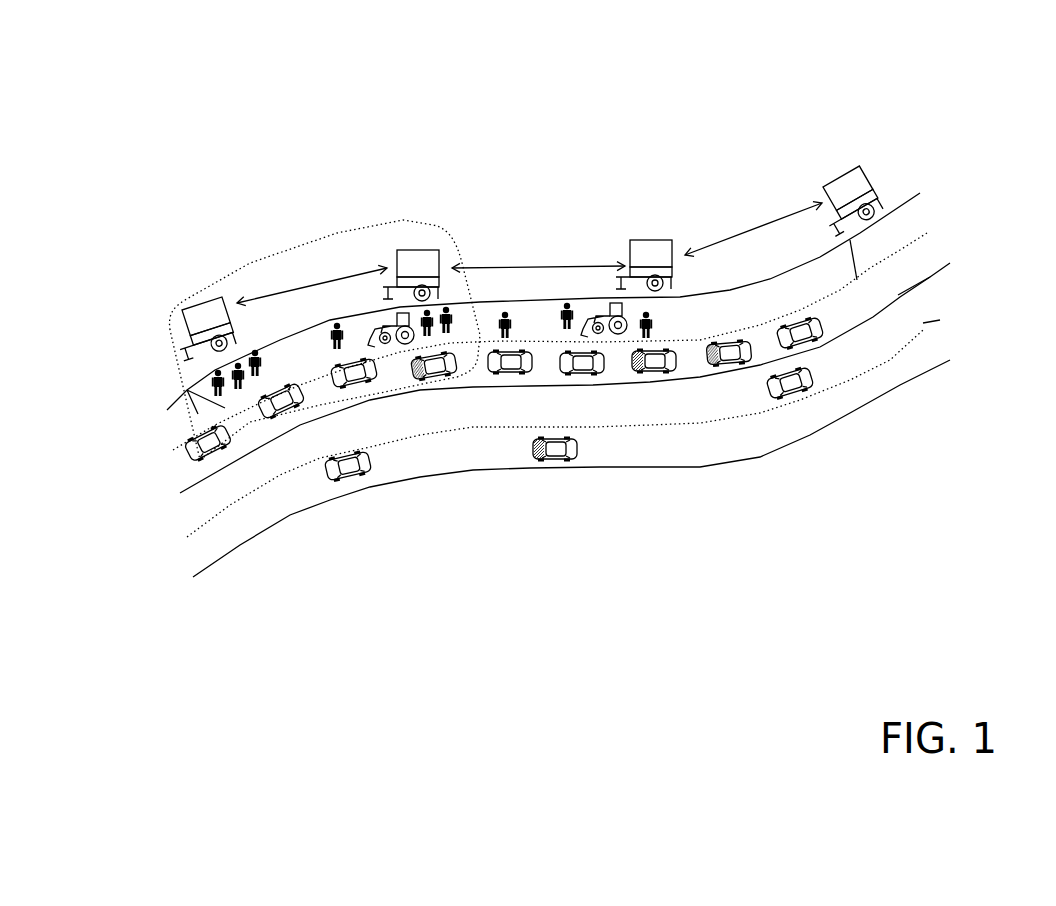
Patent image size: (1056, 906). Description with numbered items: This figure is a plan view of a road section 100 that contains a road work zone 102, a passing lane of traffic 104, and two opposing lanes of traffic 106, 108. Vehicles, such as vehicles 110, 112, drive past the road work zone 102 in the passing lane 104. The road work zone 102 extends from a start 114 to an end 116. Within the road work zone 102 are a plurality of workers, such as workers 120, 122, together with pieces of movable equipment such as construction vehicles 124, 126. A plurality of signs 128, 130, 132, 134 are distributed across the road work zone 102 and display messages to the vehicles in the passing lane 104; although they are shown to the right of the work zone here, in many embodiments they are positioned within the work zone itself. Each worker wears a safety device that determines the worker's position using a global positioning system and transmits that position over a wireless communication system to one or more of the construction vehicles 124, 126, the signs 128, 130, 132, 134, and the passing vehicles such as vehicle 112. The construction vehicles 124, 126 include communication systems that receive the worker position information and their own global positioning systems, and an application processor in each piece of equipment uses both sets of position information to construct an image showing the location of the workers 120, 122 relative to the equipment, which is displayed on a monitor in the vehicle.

The road section 100 is at (923, 118).
The road work zone 102 is at (858, 272).
The passing lane of traffic 104 is at (935, 275).
The opposing lane of traffic 106 is at (925, 322).
The opposing lane of traffic 108 is at (933, 363).
The vehicle 110 is at (287, 407).
The vehicle 112 is at (435, 370).
The start 114 is at (875, 235).
The end 116 is at (177, 406).
The worker 120 is at (567, 305).
The worker 122 is at (504, 312).
The construction vehicle 124 is at (383, 327).
The construction vehicle 126 is at (620, 333).
The sign 128 is at (203, 303).
The sign 130 is at (440, 252).
The sign 132 is at (662, 248).
The sign 134 is at (852, 182).